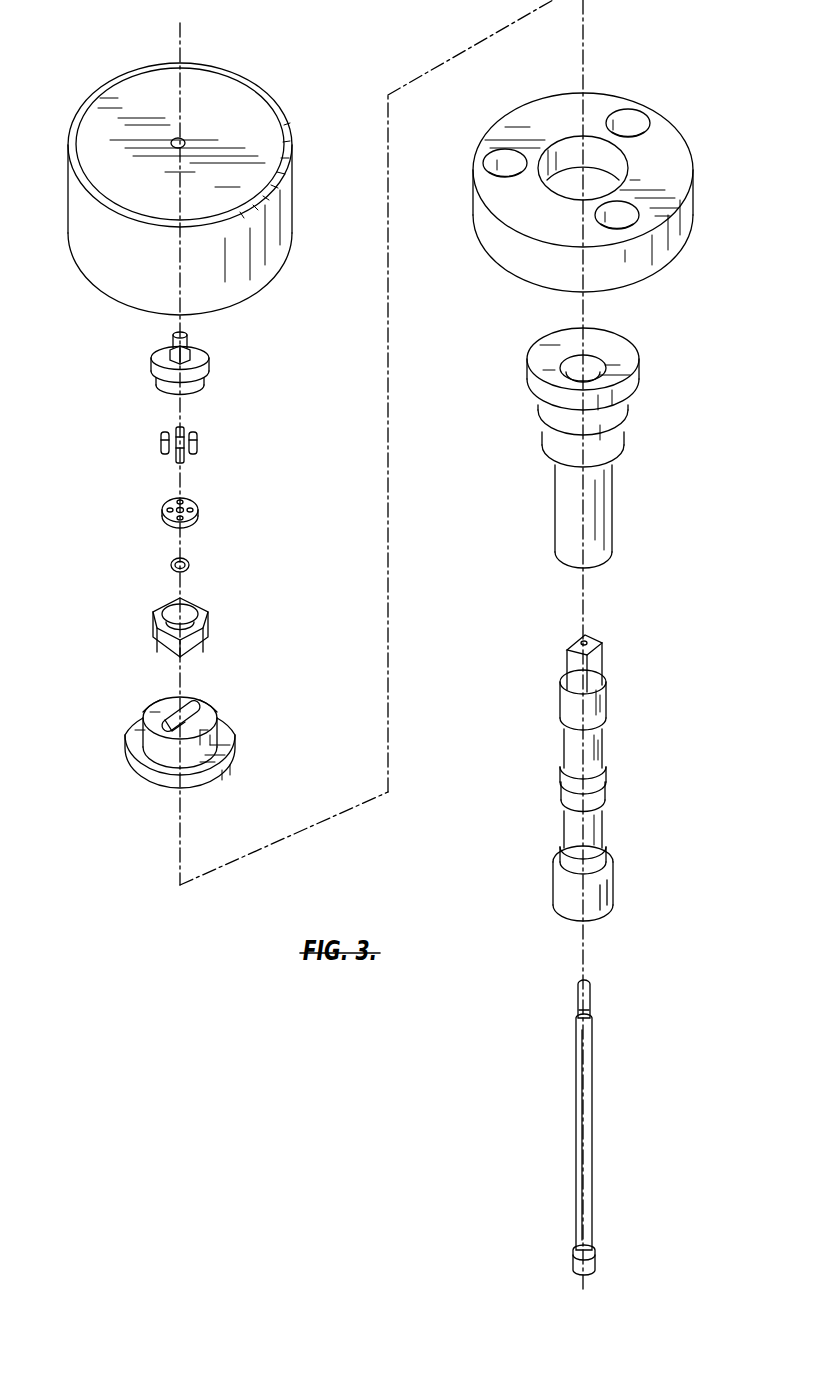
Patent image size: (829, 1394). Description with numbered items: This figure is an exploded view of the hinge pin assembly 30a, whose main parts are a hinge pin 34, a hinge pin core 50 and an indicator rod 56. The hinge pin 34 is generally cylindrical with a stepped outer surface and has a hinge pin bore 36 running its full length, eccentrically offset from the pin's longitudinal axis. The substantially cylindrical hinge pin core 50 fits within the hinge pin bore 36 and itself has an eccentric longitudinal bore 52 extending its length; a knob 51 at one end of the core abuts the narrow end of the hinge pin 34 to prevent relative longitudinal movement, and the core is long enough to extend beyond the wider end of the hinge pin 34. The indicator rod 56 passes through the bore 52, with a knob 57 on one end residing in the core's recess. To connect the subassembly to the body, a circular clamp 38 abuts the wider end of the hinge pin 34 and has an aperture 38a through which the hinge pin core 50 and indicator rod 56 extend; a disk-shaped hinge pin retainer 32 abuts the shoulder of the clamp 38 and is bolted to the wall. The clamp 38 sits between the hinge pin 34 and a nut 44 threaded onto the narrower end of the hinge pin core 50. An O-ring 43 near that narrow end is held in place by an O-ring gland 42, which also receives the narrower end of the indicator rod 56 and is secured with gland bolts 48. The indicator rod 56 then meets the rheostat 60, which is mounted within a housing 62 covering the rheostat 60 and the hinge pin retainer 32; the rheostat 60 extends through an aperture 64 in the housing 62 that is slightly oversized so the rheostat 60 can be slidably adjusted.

The hinge pin assembly 30a is at (217, 174).
The housing 62 is at (277, 231).
The aperture 64 is at (181, 138).
The rheostat 60 is at (198, 362).
The gland bolts 48 is at (200, 445).
The O-ring gland 42 is at (197, 520).
The O-ring 43 is at (190, 561).
The nut 44 is at (209, 620).
The circular clamp 38 is at (213, 728).
The aperture 38a is at (186, 712).
The hinge pin retainer 32 is at (658, 252).
The hinge pin 34 is at (612, 448).
The hinge pin bore 36 is at (586, 372).
The hinge pin core 50 is at (617, 766).
The longitudinal bore 52 is at (589, 632).
The knob 51 is at (606, 895).
The indicator rod 56 is at (618, 1127).
The knob 57 is at (598, 1264).